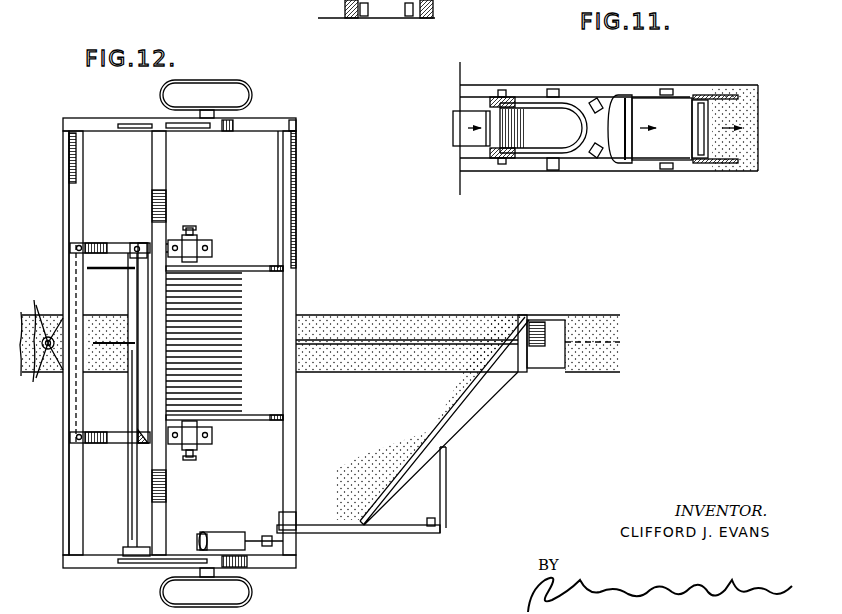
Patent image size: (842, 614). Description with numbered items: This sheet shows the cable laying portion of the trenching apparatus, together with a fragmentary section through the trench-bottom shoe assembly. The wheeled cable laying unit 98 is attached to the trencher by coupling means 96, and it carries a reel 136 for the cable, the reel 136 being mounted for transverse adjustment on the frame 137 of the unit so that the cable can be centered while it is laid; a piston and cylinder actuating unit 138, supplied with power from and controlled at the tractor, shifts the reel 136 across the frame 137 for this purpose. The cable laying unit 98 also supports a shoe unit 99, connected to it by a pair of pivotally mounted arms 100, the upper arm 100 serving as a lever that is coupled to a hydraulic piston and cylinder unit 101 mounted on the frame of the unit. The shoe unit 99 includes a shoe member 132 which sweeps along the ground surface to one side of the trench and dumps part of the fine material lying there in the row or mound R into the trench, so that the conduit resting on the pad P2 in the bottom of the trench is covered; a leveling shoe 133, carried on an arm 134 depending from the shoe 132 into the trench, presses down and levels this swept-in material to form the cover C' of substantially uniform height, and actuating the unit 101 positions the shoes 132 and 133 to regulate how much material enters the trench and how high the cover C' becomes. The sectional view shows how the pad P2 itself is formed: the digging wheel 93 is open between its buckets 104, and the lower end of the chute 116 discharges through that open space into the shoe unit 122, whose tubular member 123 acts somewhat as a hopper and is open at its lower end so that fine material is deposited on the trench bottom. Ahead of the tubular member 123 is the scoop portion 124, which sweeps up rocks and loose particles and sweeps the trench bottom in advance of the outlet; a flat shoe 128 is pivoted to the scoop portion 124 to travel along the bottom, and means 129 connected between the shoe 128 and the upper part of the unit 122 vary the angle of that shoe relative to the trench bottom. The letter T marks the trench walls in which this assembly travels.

In FIG. 11, the wheel 93 is at (533, 97).
In FIG. 12, the coupling means 96 is at (51, 327).
In FIG. 12, the wheeled cable laying unit 98 is at (298, 203).
In FIG. 12, the shoe unit 99 is at (468, 432).
In FIG. 12, the pivotally mounted arms 100 is at (338, 532).
In FIG. 12, the hydraulic piston and cylinder unit 101 is at (227, 531).
In FIG. 11, the buckets 104 is at (585, 97).
In FIG. 11, the chute 116 is at (462, 134).
In FIG. 11, the shoe unit 122 is at (705, 96).
In FIG. 11, the tubular member 123 is at (680, 97).
In FIG. 11, the scoop portion 124 is at (621, 96).
In FIG. 11, the flat shoe 128 is at (712, 152).
In FIG. 11, the angle adjusting means 129 is at (668, 170).
In FIG. 12, the shoe member 132 is at (493, 381).
In FIG. 12, the leveling shoe 133 is at (557, 330).
In FIG. 12, the arm 134 is at (522, 320).
In FIG. 12, the reel 136 is at (225, 262).
In FIG. 12, the frame 137 is at (165, 203).
In FIG. 12, the piston and cylinder actuating unit 138 is at (129, 455).
In FIG. 12, the tube T is at (404, 322).
In FIG. 11, the tube T is at (418, 12).
In FIG. 12, the pad P2 is at (334, 327).
In FIG. 12, the row or mound R is at (362, 420).
In FIG. 12, the cover C' is at (483, 300).